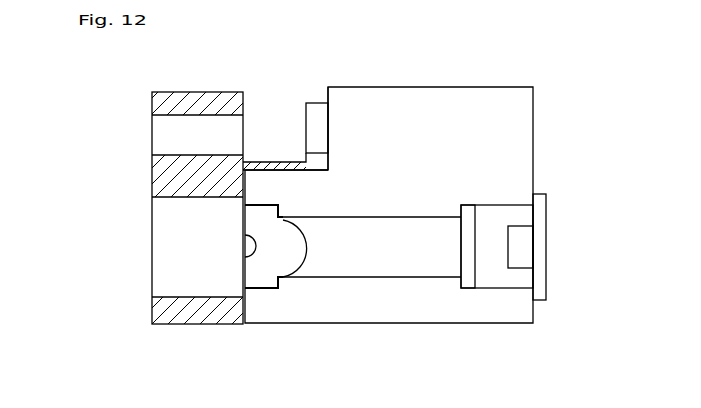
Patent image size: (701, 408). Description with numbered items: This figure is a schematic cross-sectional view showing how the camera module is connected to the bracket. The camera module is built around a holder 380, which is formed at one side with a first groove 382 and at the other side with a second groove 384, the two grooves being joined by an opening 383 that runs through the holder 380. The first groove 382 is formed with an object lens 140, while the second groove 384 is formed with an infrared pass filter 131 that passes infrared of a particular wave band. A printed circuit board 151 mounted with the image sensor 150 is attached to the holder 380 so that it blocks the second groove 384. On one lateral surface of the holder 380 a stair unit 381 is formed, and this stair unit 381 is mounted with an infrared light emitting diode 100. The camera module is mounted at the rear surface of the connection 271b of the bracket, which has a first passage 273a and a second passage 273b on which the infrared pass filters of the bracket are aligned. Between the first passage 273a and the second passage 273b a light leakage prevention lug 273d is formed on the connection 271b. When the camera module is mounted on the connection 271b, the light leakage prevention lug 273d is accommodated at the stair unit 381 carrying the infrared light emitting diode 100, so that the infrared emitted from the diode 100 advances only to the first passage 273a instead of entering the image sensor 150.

The infrared light emitting diode 100 is at (310, 112).
The infrared pass filter 131 is at (466, 275).
The object lens 140 is at (283, 258).
The image sensor 150 is at (523, 258).
The printed circuit board 151 is at (542, 240).
The connection 271b is at (180, 105).
The first passage 273a is at (173, 134).
The second passage 273b is at (168, 248).
The light leakage prevention lug 273d is at (272, 161).
The holder 380 is at (472, 100).
The stair unit 381 is at (327, 100).
The first groove 382 is at (280, 276).
The opening 383 is at (390, 258).
The second groove 384 is at (502, 289).